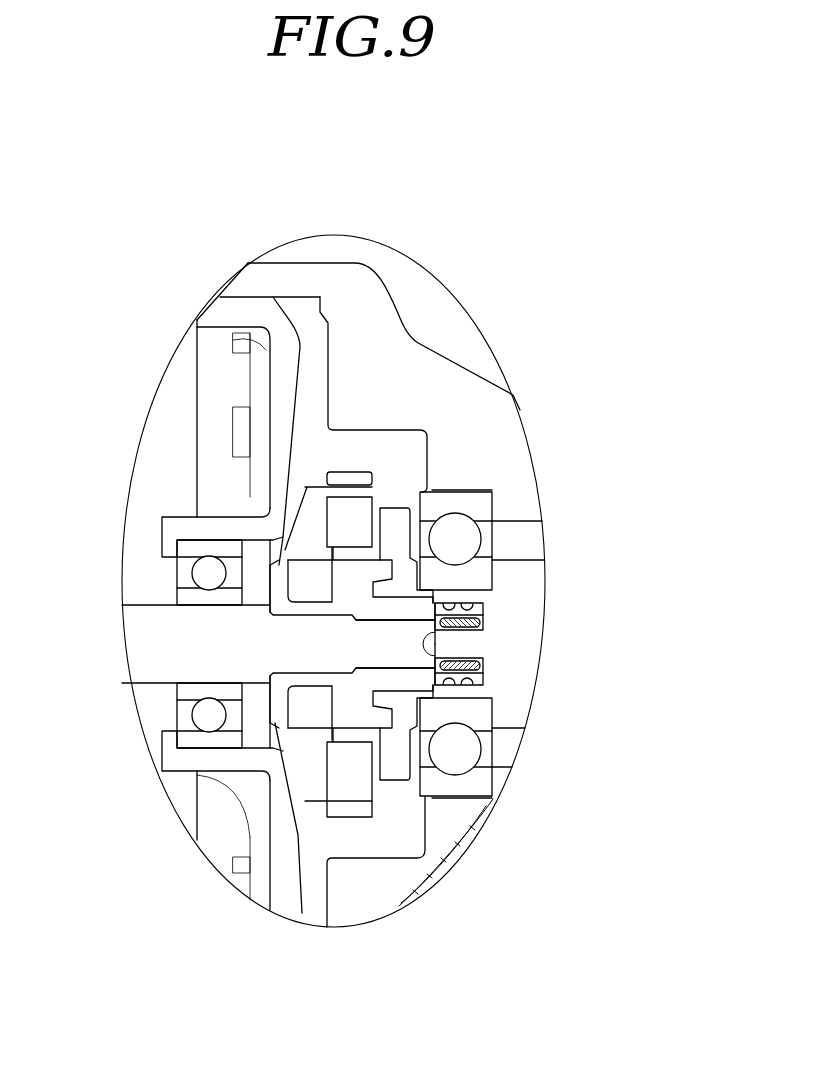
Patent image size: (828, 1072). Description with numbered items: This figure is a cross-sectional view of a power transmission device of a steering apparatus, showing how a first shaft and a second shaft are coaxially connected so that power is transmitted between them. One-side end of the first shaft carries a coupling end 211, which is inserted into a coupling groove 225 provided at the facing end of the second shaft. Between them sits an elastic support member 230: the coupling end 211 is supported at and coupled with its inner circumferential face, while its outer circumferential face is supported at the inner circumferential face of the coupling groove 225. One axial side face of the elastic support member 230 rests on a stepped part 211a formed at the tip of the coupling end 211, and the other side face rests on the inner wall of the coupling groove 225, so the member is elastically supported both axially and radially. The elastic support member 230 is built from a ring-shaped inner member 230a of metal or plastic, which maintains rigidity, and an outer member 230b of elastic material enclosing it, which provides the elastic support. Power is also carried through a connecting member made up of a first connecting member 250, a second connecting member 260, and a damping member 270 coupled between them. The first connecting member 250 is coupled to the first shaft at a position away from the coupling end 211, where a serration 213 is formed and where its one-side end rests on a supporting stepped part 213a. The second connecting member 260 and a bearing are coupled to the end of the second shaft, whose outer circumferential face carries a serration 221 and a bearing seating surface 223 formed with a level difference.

The coupling end 211 is at (487, 640).
The stepped part 211a is at (484, 668).
The serration 213 is at (298, 647).
The supporting stepped part 213a is at (270, 612).
The serration 221 is at (493, 799).
The bearing seating surface 223 is at (460, 593).
The coupling groove 225 is at (450, 740).
The elastic support member 230 is at (632, 600).
The inner member 230a is at (488, 623).
The outer member 230b is at (483, 612).
The first connecting member 250 is at (297, 512).
The second connecting member 260 is at (395, 520).
The damping member 270 is at (350, 510).